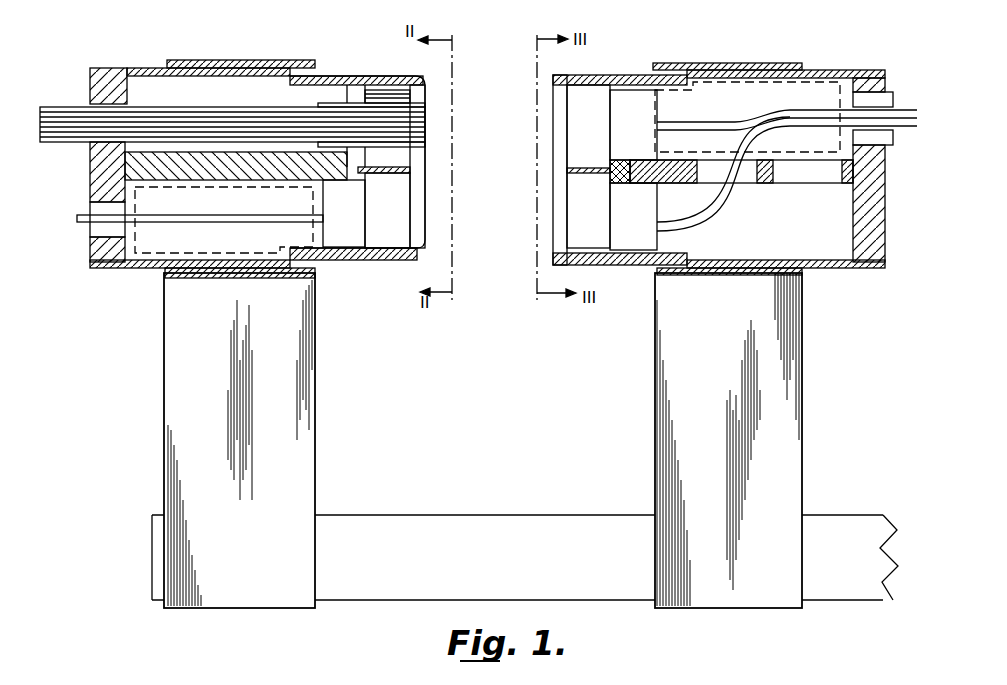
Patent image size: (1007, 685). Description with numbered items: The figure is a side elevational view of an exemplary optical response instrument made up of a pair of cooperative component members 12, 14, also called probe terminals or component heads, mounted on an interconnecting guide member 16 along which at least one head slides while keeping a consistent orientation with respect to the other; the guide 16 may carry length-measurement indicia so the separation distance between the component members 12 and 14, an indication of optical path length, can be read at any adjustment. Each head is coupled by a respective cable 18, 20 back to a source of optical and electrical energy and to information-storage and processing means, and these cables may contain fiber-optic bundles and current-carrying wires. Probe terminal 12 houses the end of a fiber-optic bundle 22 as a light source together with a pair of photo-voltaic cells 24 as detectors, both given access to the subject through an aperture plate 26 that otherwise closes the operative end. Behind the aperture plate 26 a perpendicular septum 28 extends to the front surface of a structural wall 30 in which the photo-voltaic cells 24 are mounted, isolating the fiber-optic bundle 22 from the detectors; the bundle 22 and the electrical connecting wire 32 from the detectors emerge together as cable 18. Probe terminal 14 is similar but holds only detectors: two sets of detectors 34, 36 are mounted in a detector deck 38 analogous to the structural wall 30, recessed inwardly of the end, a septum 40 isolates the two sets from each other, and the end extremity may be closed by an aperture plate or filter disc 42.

The component member 12 is at (357, 30).
The component member 14 is at (720, 28).
The guide member 16 is at (508, 568).
The cable 18 is at (80, 140).
The cable 20 is at (913, 100).
The fiber-optic bundle 22 is at (238, 116).
The photo-voltaic cells 24 is at (353, 217).
The aperture plate 26 is at (424, 72).
The septum 28 is at (386, 175).
The structural wall 30 is at (358, 155).
The electrical connecting wire 32 is at (232, 210).
The detectors 34 is at (628, 122).
The detectors 36 is at (645, 239).
The detector deck 38 is at (620, 165).
The septum 40 is at (579, 174).
The aperture plate or filter disc 42 is at (560, 220).